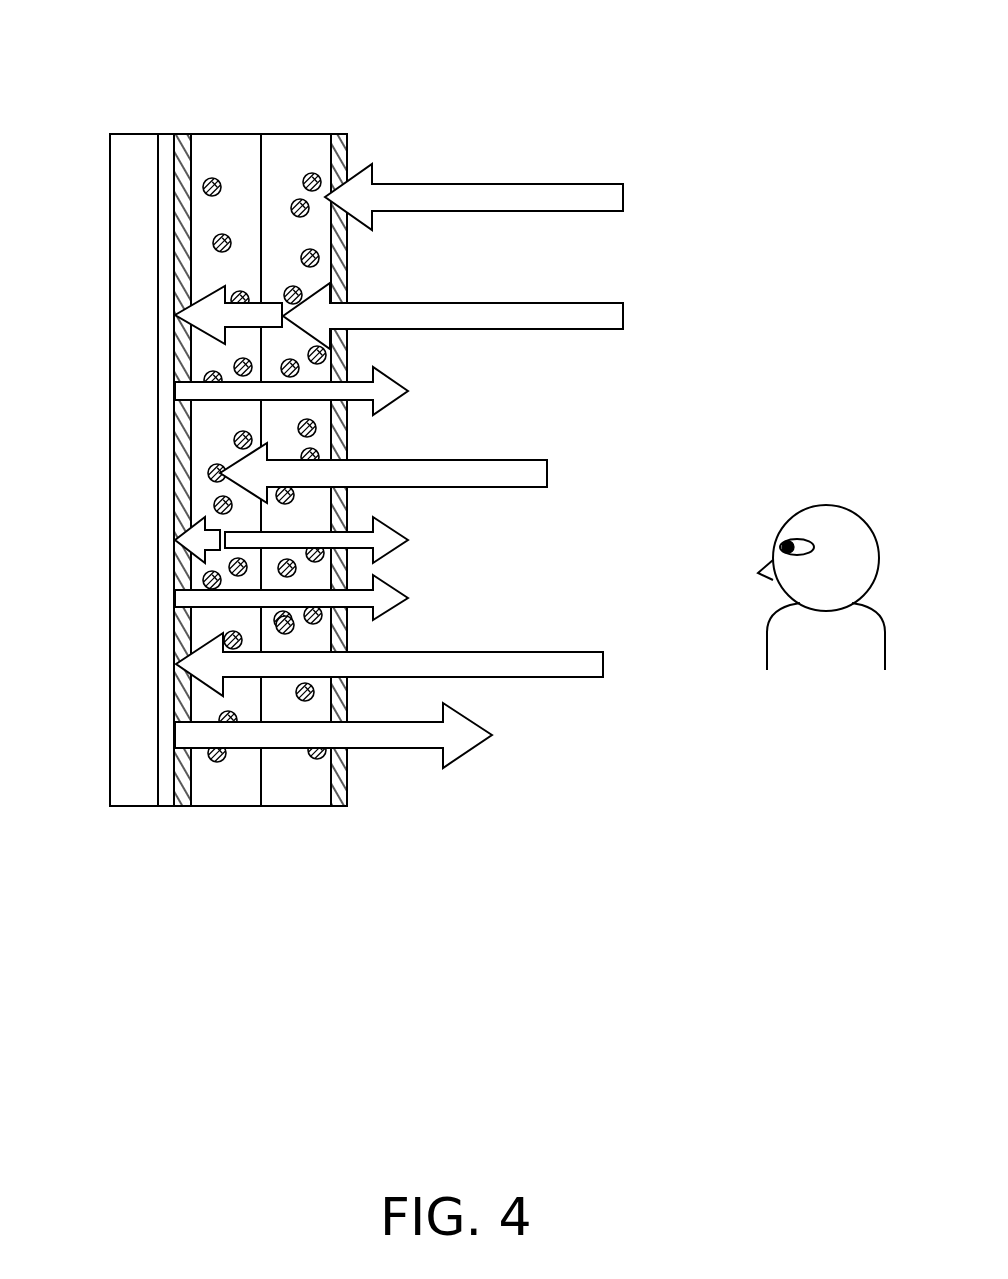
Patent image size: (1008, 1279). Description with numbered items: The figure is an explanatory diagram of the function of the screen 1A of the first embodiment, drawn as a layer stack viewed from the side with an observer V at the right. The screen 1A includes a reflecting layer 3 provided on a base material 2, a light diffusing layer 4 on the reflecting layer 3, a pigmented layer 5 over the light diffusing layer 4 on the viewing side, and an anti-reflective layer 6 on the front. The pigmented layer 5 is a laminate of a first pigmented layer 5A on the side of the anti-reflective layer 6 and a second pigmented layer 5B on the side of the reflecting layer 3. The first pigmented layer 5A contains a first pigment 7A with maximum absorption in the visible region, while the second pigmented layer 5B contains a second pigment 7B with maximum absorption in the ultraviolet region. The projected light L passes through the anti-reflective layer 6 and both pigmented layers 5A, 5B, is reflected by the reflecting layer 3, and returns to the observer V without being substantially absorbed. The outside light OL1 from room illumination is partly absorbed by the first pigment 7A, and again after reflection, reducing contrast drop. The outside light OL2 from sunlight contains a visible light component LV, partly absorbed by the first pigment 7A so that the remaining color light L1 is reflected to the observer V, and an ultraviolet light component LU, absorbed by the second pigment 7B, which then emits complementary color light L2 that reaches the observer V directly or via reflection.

The screen 1A is at (432, 70).
The base material 2 is at (137, 795).
The reflecting layer 3 is at (167, 800).
The light diffusing layer 4 is at (183, 800).
The pigmented layer 5 is at (261, 528).
The first pigmented layer 5A is at (300, 795).
The second pigmented layer 5B is at (228, 795).
The anti-reflective layer 6 is at (340, 800).
The first pigment 7A is at (312, 172).
The second pigment 7B is at (214, 176).
The outside light OL1 is at (612, 196).
The outside light OL2 is at (495, 393).
The visible light component LV is at (612, 316).
The ultraviolet light component LU is at (457, 473).
The color light L1 is at (176, 392).
The color light L2 is at (176, 599).
The projected light L is at (465, 727).
The observer V is at (843, 508).